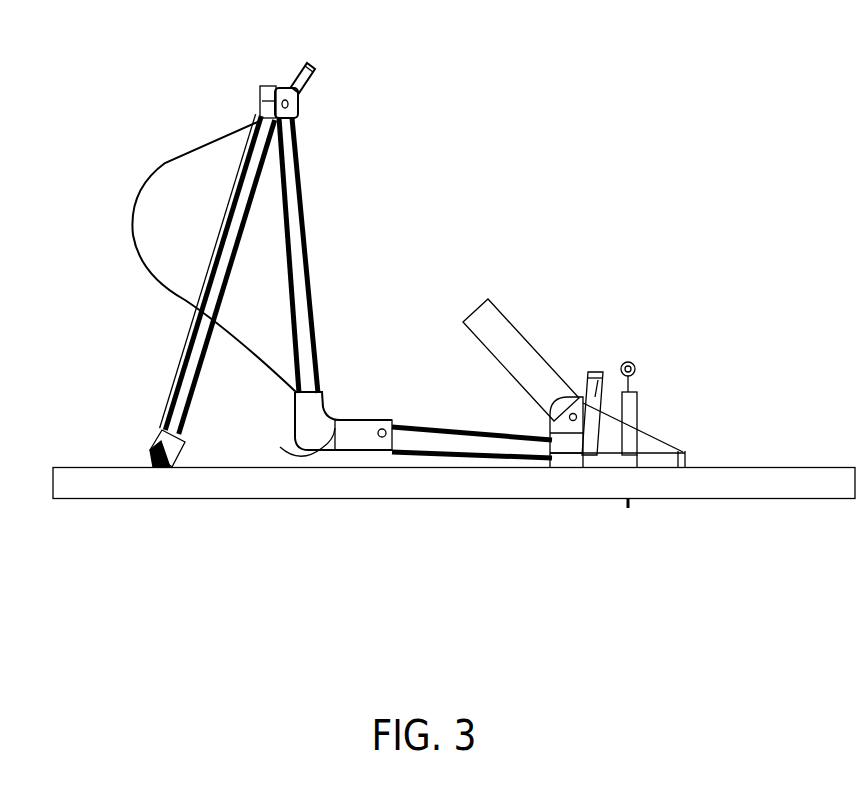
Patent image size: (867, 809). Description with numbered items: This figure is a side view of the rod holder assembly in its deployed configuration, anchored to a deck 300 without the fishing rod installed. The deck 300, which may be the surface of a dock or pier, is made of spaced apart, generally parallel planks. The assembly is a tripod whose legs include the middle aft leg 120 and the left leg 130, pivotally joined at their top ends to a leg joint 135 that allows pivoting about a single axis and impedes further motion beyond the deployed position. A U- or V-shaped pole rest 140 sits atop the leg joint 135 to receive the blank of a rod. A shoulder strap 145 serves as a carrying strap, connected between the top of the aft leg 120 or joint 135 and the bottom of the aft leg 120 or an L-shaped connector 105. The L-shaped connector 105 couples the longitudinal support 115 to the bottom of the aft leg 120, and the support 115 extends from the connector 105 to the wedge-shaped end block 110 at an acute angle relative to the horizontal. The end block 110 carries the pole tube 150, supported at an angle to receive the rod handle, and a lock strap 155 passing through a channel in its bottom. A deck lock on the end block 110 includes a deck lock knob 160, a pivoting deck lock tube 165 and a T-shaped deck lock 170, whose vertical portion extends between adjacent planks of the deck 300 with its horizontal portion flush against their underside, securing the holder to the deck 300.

The L-shaped connector 105 is at (335, 430).
The end block 110 is at (683, 451).
The support 115 is at (456, 442).
The aft leg 120 is at (305, 253).
The left leg 130 is at (185, 405).
The leg joint 135 is at (270, 97).
The pole rest 140 is at (315, 70).
The shoulder strap 145 is at (128, 213).
The pole tube 150 is at (510, 347).
The lock strap 155 is at (595, 372).
The deck lock knob 160 is at (632, 362).
The deck lock tube 165 is at (637, 392).
The T-shaped deck lock 170 is at (628, 505).
The deck 300 is at (317, 485).